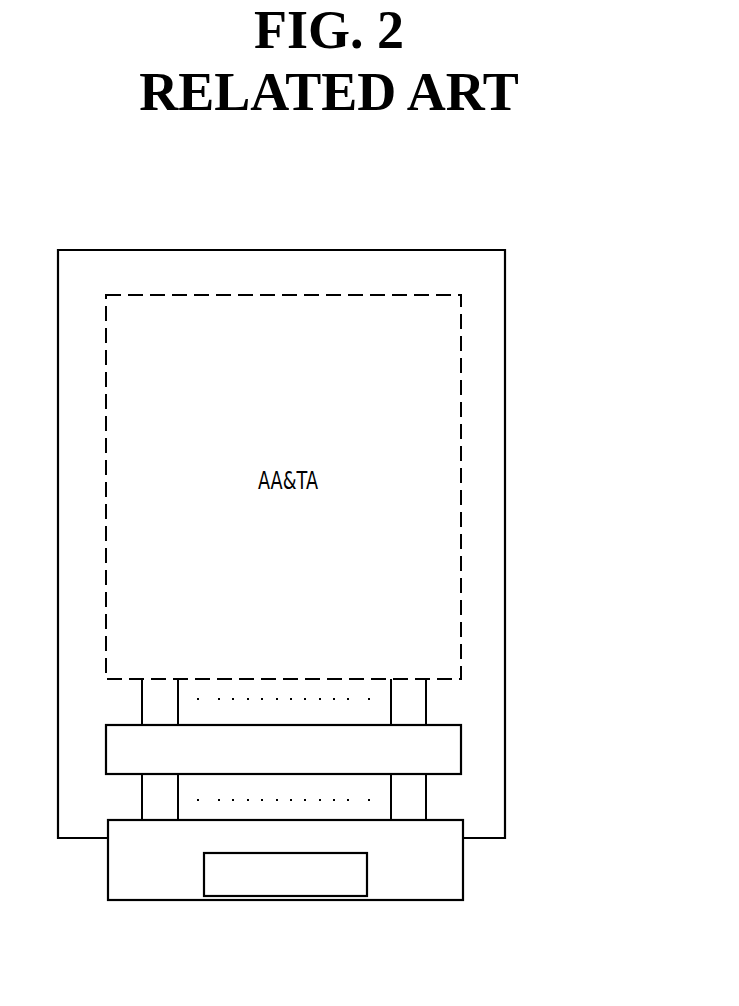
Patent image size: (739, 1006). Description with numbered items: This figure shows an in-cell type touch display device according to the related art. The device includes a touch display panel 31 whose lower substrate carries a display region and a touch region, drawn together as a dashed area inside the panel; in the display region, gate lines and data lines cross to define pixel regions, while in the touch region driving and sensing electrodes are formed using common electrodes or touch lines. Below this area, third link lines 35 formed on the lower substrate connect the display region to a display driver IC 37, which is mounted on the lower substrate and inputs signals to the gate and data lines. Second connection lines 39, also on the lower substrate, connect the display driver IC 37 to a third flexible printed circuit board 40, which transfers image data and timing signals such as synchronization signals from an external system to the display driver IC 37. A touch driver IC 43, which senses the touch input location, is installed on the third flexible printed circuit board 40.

The touch display panel 31 is at (346, 249).
The third link lines 35 is at (426, 699).
The display driver IC (D-IC) 37 is at (461, 736).
The second connection lines 39 is at (426, 788).
The third flexible printed circuit board (FPC) 40 is at (463, 872).
The touch driver IC (T-IC) 43 is at (360, 896).